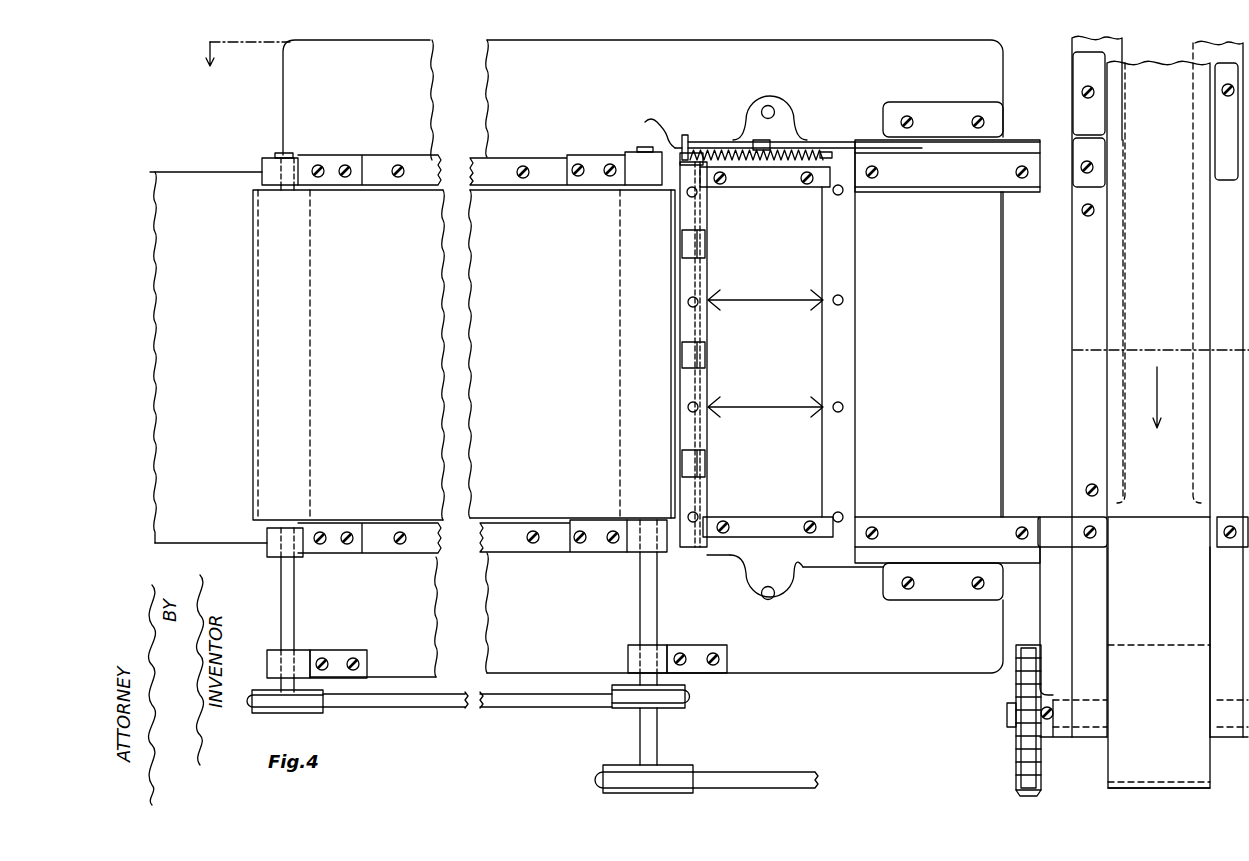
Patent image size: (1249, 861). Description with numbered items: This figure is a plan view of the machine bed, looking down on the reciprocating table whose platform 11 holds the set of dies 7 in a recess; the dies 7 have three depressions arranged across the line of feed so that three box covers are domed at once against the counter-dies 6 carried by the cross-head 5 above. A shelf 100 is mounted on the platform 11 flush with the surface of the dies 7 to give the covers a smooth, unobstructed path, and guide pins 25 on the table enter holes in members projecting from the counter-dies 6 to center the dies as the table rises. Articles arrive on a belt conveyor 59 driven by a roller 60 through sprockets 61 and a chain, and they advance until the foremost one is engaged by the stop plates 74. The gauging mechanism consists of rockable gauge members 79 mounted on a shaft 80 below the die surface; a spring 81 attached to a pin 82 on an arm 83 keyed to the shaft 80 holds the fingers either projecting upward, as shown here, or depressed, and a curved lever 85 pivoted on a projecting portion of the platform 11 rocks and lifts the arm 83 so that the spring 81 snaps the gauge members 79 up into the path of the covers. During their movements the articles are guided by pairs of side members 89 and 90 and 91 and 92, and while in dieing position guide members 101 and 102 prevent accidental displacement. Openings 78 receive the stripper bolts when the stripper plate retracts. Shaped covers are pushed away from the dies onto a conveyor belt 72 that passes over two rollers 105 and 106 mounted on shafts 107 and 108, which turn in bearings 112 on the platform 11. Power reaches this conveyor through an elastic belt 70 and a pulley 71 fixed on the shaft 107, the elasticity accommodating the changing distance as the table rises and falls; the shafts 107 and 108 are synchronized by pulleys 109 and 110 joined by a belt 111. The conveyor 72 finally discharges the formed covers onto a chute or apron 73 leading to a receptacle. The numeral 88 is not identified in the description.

The cross-head 5 is at (245, 67).
The counter-dies 6 is at (735, 245).
The dies 7 is at (813, 447).
The platform 11 is at (837, 665).
The guide pins 25 is at (770, 104).
The belt conveyor 59 is at (1180, 622).
The roller 60 is at (1200, 763).
The sprocket 61 is at (1015, 748).
The belt 70 is at (763, 773).
The pulley 71 is at (672, 769).
The conveyor belt 72 is at (320, 470).
The chute or apron 73 is at (177, 478).
The stop plates 74 is at (1185, 513).
The openings 78 is at (689, 196).
The gauge members 79 is at (692, 250).
The shaft 80 is at (708, 194).
The spring 81 is at (818, 152).
The pin 82 is at (686, 135).
The arm 83 is at (692, 158).
The curved lever 85 is at (645, 129).
The bracket column 88 is at (1040, 163).
The side member 89 is at (963, 527).
The side member 90 is at (930, 181).
The side member 91 is at (408, 186).
The side member 92 is at (405, 526).
The shelf 100 is at (987, 430).
The guide member 101 is at (765, 184).
The guide member 102 is at (783, 523).
The roller 105 is at (628, 466).
The roller 106 is at (302, 489).
The shaft 107 is at (642, 613).
The shaft 108 is at (296, 607).
The pulley 109 is at (630, 709).
The pulley 110 is at (322, 708).
The belt 111 is at (503, 702).
The bearings 112 is at (297, 161).